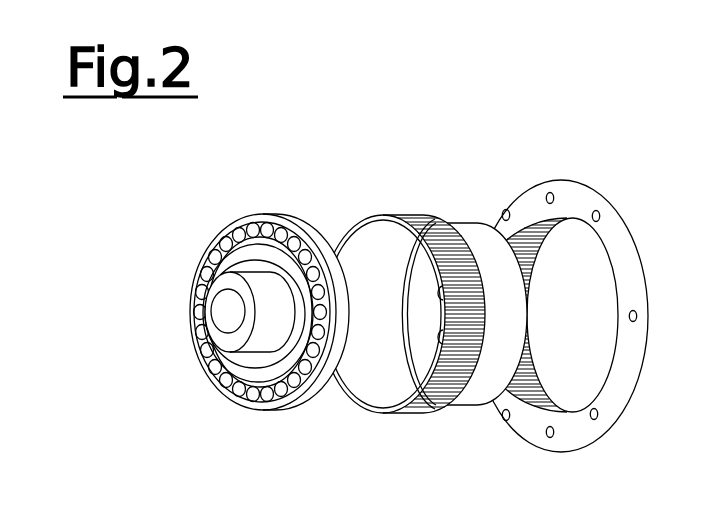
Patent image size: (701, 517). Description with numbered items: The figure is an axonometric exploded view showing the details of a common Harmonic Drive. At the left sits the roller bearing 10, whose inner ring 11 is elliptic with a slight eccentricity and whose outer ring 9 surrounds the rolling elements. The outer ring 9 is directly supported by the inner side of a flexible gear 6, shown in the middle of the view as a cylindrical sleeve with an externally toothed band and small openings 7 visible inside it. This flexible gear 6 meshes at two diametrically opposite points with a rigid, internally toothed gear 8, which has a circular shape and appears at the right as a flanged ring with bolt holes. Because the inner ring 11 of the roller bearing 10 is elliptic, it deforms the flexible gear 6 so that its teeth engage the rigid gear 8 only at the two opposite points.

The flexible gear 6 is at (437, 222).
The holes in housing 7 is at (422, 283).
The rigid, internally toothed gear 8 is at (563, 220).
The outer ring 9 is at (312, 388).
The roller bearing 10 is at (210, 228).
The inner ring 11 is at (243, 373).